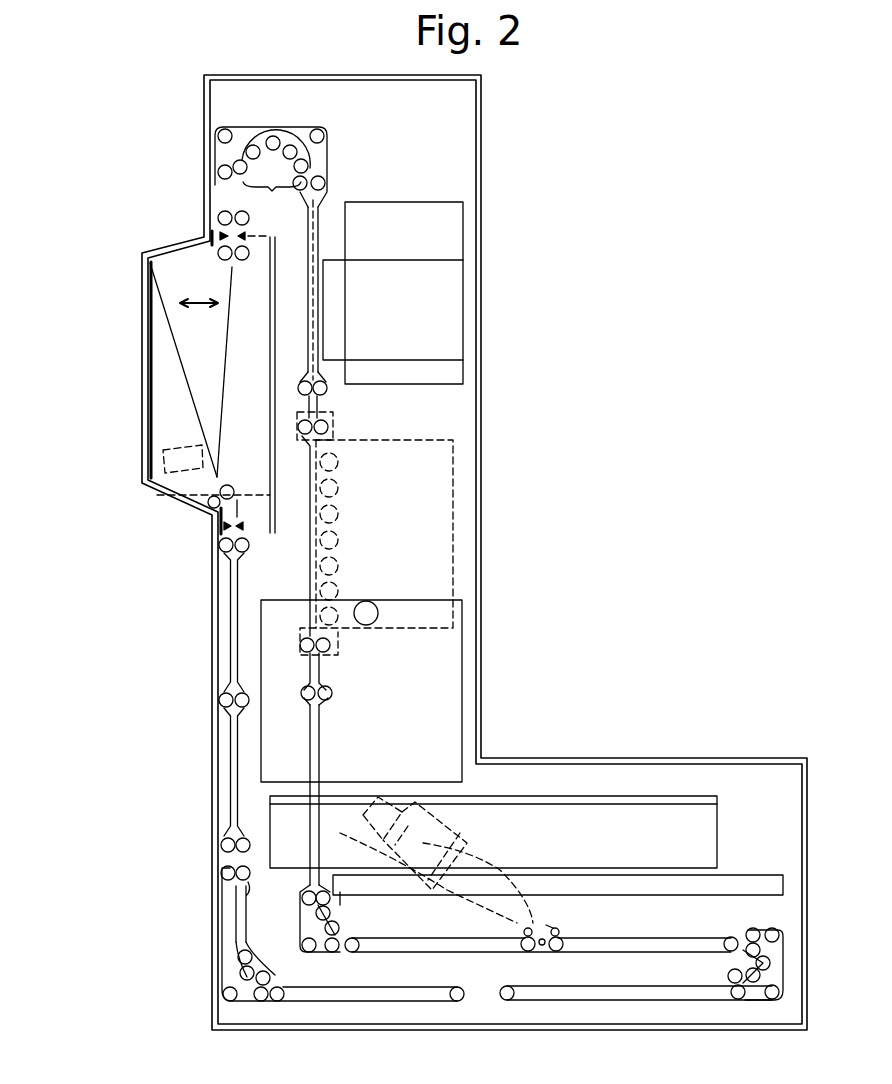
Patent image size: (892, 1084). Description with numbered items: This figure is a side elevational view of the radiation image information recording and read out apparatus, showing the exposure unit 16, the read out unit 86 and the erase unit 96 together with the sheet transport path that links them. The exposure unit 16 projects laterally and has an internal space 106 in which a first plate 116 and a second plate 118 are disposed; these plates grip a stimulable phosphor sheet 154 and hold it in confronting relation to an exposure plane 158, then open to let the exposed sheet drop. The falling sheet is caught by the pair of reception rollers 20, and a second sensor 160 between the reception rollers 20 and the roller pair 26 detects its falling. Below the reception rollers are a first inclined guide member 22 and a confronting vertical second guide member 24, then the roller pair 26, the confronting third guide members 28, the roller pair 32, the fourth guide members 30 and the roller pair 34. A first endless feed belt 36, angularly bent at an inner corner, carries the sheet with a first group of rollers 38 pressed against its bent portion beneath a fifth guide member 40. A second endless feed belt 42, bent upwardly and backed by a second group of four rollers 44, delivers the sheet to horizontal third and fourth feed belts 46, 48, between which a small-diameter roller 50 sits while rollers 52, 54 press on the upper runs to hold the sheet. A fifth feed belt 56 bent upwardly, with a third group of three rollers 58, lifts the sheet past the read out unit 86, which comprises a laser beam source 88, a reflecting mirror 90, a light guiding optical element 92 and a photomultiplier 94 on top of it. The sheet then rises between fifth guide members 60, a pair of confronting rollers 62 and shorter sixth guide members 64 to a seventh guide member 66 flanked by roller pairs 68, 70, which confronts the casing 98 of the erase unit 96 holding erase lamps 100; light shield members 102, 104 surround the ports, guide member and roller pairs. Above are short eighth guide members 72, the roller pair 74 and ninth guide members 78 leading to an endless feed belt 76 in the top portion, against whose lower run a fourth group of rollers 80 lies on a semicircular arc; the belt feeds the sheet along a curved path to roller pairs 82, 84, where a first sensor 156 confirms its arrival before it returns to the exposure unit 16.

The exposure unit 16 is at (172, 386).
The reception rollers 20 is at (150, 485).
The first inclined guide member 22 is at (217, 522).
The second guide member 24 is at (240, 505).
The pair of rollers 26 is at (218, 550).
The third guide members 28 is at (230, 625).
The fourth guide members 30 is at (232, 767).
The pair of rollers 32 is at (222, 700).
The roller pair 34 is at (223, 845).
The first endless feed belt 36 is at (228, 950).
The first group of rollers 38 is at (272, 976).
The fifth guide member 40 is at (244, 916).
The second endless feed belt 42 is at (633, 993).
The second group of rollers 44 is at (728, 955).
The third endless feed belt 46 is at (662, 940).
The fourth endless feed belt 48 is at (425, 950).
The small-diameter roller 50 is at (545, 948).
The roller 52 is at (525, 933).
The roller 54 is at (563, 932).
The fifth endless feed belt 56 is at (322, 950).
The third roller group 58 is at (333, 898).
The fifth guide members 60 is at (320, 752).
The pair of confronting rollers 62 is at (330, 694).
The sixth guide members 64 is at (320, 667).
The seventh guide member 66 is at (310, 510).
The roller pair 68 is at (302, 641).
The roller pair 70 is at (328, 429).
The eighth short guide members 72 is at (303, 382).
The pair of rollers 74 is at (325, 392).
The endless feed belt 76 is at (317, 152).
The ninth guide members 78 is at (307, 223).
The fourth group of rollers 80 is at (272, 198).
The roller pair 82 is at (222, 213).
The roller pair 84 is at (210, 236).
The read out unit 86 is at (589, 793).
The laser beam source 88 is at (576, 854).
The reflecting mirror 90 is at (553, 928).
The light guiding optical element 92 is at (498, 866).
The photomultiplier 94 is at (360, 823).
The erase unit 96 is at (440, 494).
The casing 98 is at (393, 536).
The erase lamps 100 is at (337, 466).
The light shield member 102 is at (338, 641).
The light shield member 104 is at (334, 420).
The internal space 106 is at (219, 349).
The first plate 116 is at (175, 342).
The second plate 118 is at (225, 385).
The stimulable phosphor sheet 154 is at (313, 227).
The first sensor 156 is at (222, 246).
The exposure plane 158 is at (147, 288).
The second sensor 160 is at (221, 531).